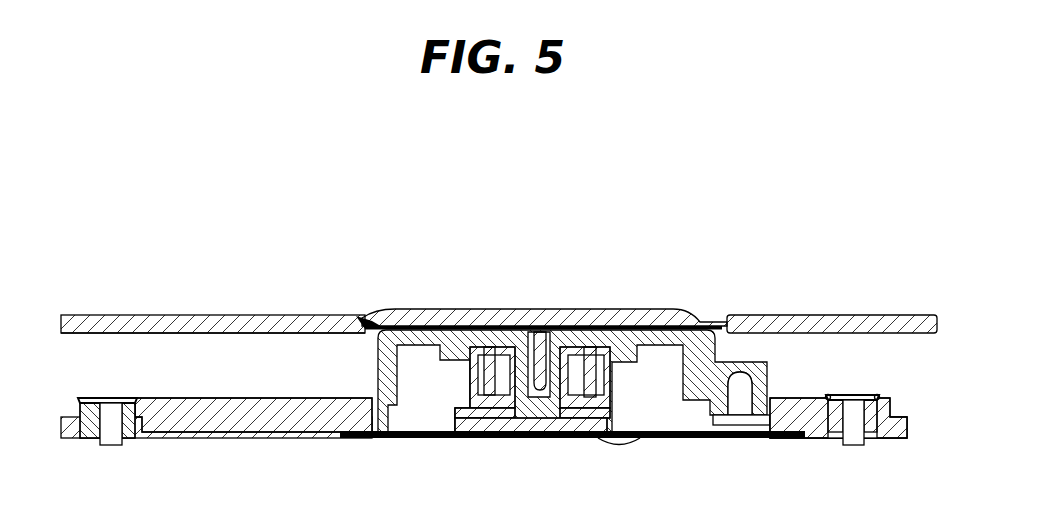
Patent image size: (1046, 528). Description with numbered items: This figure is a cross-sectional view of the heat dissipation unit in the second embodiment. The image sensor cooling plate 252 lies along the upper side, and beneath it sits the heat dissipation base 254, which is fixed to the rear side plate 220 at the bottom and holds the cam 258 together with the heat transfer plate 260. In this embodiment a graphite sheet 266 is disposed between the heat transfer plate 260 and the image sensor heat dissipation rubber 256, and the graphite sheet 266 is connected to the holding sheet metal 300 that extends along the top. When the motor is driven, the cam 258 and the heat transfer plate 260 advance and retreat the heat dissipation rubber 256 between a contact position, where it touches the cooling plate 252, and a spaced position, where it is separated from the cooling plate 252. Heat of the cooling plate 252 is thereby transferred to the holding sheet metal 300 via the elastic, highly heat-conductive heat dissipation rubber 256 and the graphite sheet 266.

The rear side plate 220 is at (887, 430).
The image sensor cooling plate 252 is at (660, 314).
The heat dissipation base 254 is at (767, 372).
The image sensor heat dissipation rubber 256 is at (498, 323).
The cam 258 is at (533, 413).
The heat transfer plate 260 is at (505, 340).
The graphite sheet 266 is at (462, 323).
The holding sheet metal 300 is at (818, 329).